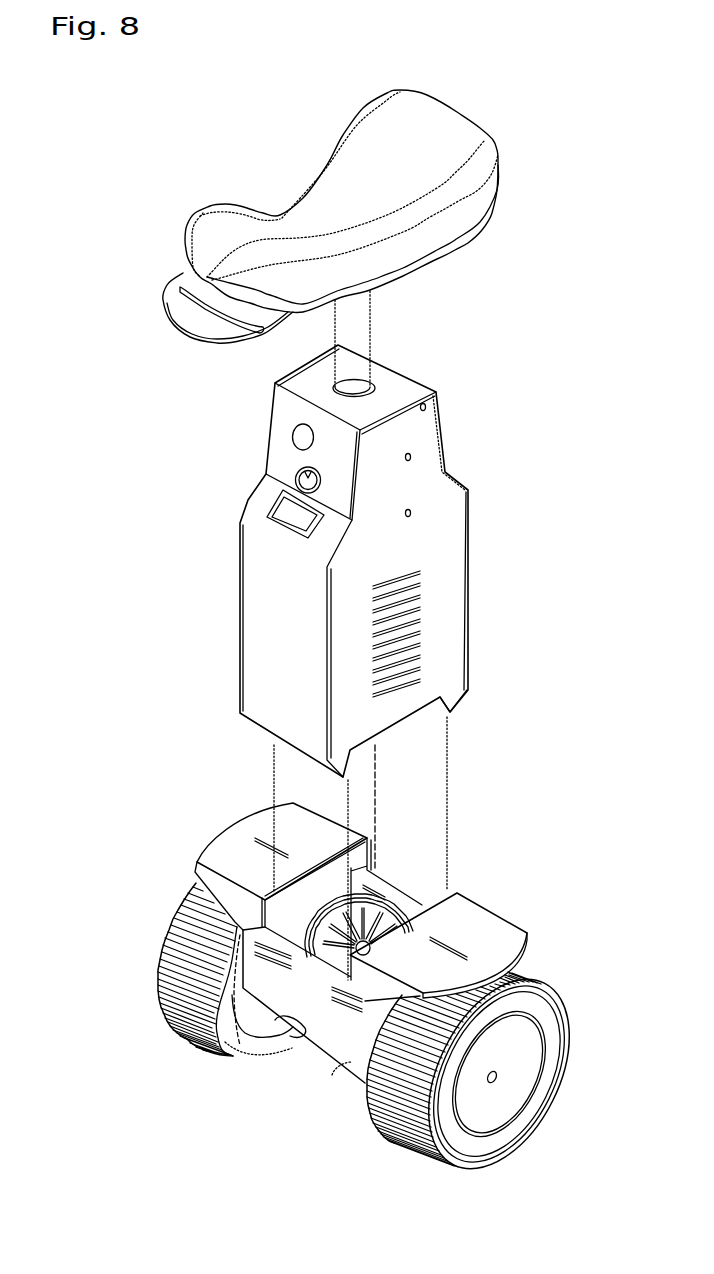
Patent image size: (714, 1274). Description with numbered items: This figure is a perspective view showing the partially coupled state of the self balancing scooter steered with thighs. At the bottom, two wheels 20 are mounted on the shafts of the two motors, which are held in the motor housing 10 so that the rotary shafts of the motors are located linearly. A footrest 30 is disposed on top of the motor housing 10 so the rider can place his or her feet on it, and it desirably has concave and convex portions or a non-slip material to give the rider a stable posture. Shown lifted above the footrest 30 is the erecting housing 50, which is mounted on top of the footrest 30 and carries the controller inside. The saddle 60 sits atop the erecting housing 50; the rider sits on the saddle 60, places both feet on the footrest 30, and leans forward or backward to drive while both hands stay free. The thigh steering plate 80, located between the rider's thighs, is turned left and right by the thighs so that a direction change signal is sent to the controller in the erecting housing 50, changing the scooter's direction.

The motor housing 10 is at (350, 1062).
The wheels 20 is at (222, 1053).
The footrest 30 is at (483, 920).
The erecting housing 50 is at (248, 618).
The saddle 60 is at (262, 220).
The thigh steering plate 80 is at (208, 338).